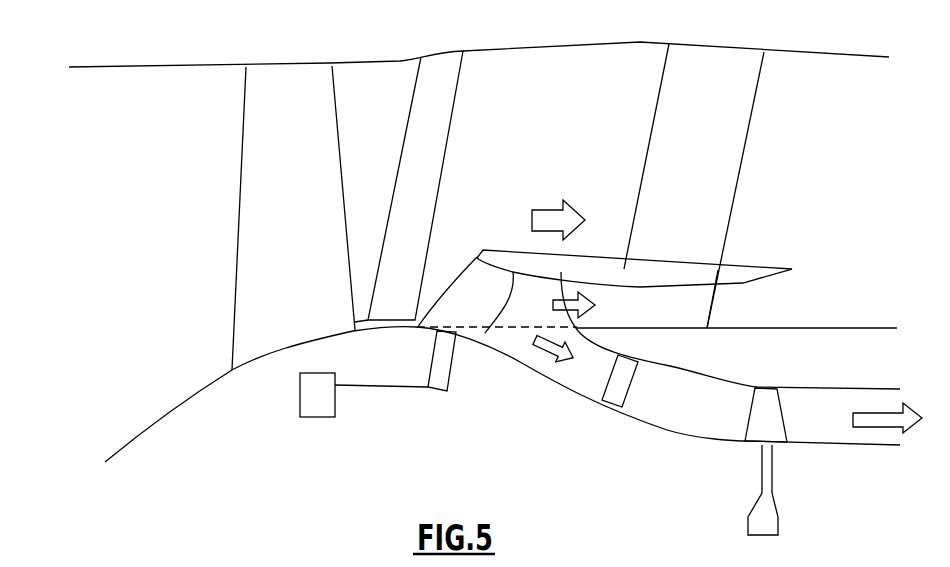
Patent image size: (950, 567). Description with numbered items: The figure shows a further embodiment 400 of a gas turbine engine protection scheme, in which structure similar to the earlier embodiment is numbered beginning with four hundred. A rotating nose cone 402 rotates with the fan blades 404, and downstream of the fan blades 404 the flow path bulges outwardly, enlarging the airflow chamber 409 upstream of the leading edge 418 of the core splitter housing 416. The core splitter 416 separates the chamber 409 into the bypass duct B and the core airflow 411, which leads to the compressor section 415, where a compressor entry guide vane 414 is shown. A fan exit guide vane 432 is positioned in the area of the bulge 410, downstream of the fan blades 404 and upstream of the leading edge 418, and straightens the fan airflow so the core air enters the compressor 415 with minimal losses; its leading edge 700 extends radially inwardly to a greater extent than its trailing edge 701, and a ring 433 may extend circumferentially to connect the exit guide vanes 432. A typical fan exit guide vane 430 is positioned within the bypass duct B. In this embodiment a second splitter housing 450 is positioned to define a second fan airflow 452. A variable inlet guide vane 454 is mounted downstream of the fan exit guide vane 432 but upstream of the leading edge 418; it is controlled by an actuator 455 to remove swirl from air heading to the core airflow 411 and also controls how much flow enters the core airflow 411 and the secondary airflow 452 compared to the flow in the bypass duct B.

The gas turbine engine embodiment 400 is at (88, 284).
The rotating nose cone 402 is at (210, 413).
The fan blades 404 is at (258, 287).
The airflow chamber 409 is at (568, 125).
The bulge 410 is at (403, 330).
The core airflow 411 is at (572, 367).
The compressor entry guide vane 414 is at (613, 395).
The compressor section 415 is at (757, 427).
The core splitter housing 416 is at (808, 352).
The leading edge of splitter housing 418 is at (561, 272).
The fan exit guide vane 430 is at (737, 105).
The fan exit guide vane 432 is at (440, 85).
The ring 433 is at (380, 320).
The second splitter housing 450 is at (680, 272).
The second fan airflow 452 is at (690, 310).
The variable inlet guide vane 454 is at (475, 312).
The actuator 455 is at (318, 410).
The leading edge of exit guide vane 700 is at (355, 322).
The trailing edge of exit guide vane 701 is at (430, 270).
The bypass duct B is at (798, 171).